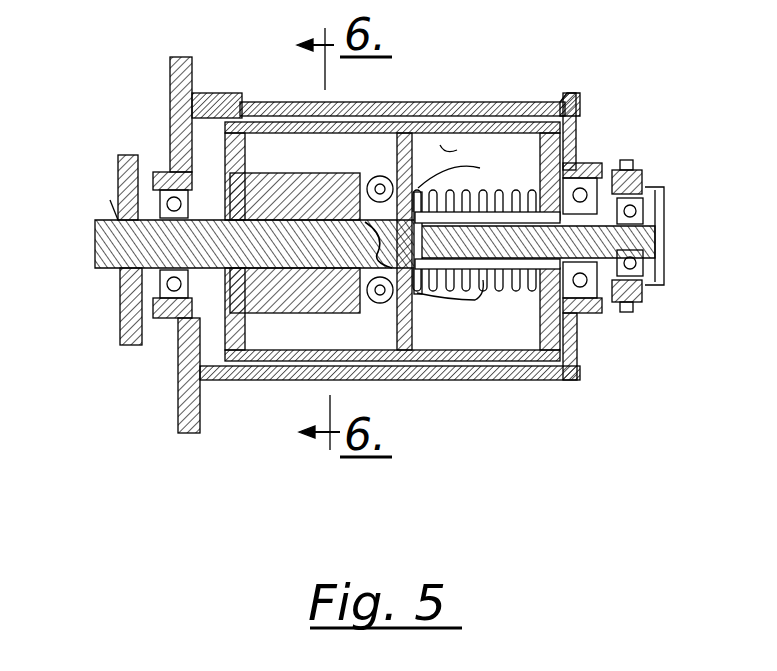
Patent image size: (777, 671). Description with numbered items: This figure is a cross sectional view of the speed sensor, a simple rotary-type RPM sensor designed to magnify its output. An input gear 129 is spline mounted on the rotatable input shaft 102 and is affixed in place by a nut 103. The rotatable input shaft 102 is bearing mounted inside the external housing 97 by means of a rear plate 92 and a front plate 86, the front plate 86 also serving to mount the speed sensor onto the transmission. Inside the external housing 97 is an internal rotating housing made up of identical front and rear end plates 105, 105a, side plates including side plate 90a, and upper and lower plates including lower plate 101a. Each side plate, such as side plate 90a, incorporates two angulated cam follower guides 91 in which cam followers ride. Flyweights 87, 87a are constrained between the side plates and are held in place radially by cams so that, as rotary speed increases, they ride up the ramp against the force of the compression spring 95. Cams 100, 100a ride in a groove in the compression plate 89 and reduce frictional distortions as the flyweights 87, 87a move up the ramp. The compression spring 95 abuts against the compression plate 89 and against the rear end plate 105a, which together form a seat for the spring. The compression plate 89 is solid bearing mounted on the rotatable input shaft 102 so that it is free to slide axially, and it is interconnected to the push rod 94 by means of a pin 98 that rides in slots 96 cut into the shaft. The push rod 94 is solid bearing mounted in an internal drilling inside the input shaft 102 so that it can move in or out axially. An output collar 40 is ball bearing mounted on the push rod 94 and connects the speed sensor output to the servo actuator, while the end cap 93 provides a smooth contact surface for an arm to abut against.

The output collar 40 is at (637, 177).
The front plate 86 is at (171, 152).
The flyweight 87 is at (262, 170).
The flyweight 87a is at (292, 313).
The compression plate 89 is at (412, 103).
The side plate 90a is at (468, 103).
The angulated cam follower guides 91 is at (480, 168).
The rear plate 92 is at (577, 152).
The end cap 93 is at (662, 270).
The push rod 94 is at (630, 302).
The compression spring 95 is at (585, 365).
The slots 96 is at (485, 280).
The external housing 97 is at (483, 370).
The pin 98 is at (422, 305).
The cam 100 is at (366, 178).
The cam 100a is at (375, 302).
The lower plate 101a is at (250, 361).
The rotatable input shaft 102 is at (176, 348).
The nut 103 is at (110, 287).
The front end plate 105 is at (160, 172).
The rear end plate 105a is at (590, 162).
The input gear 129 is at (118, 185).